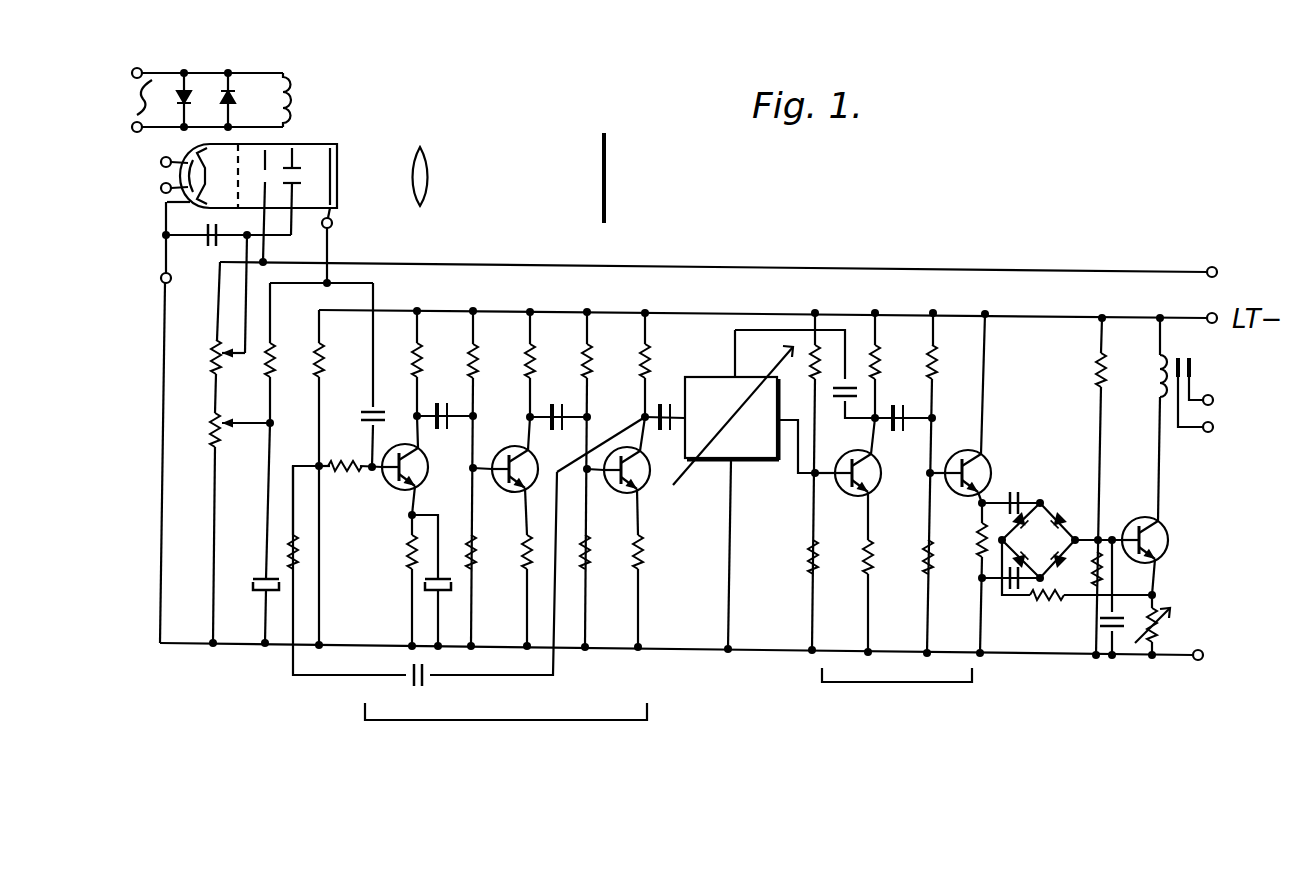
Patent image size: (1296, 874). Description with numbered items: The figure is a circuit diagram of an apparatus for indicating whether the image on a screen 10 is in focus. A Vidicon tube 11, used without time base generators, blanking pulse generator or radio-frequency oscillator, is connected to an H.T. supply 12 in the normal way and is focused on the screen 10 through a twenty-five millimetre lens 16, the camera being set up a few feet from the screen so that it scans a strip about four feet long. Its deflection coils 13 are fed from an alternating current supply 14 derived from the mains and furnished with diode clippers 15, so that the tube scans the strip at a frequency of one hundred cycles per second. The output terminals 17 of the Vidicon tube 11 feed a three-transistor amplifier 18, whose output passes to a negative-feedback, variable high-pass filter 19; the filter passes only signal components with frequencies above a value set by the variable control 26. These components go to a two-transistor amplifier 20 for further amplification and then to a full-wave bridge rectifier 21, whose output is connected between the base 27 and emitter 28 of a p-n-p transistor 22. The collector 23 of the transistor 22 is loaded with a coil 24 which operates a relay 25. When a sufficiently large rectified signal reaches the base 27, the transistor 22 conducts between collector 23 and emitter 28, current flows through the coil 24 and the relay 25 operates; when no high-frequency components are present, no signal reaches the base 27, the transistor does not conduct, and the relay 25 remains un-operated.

The screen 10 is at (602, 145).
The Vidicon tube 11 is at (321, 142).
The H.T. supply 12 is at (1209, 265).
The deflection coils 13 is at (290, 71).
The alternating current supply 14 is at (151, 73).
The diode clippers 15 is at (224, 84).
The lens 16 is at (432, 143).
The output terminals 17 is at (333, 223).
The three-transistor amplifier 18 is at (505, 720).
The variable high-pass filter 19 is at (703, 375).
The two-transistor amplifier 20 is at (897, 682).
The full-wave bridge rectifier 21 is at (1049, 501).
The p-n-p transistor 22 is at (1165, 540).
The collector 23 is at (1163, 521).
The coil 24 is at (1152, 378).
The relay 25 is at (1185, 351).
The variable control 26 is at (782, 358).
The base 27 is at (1128, 528).
The emitter 28 is at (1158, 568).